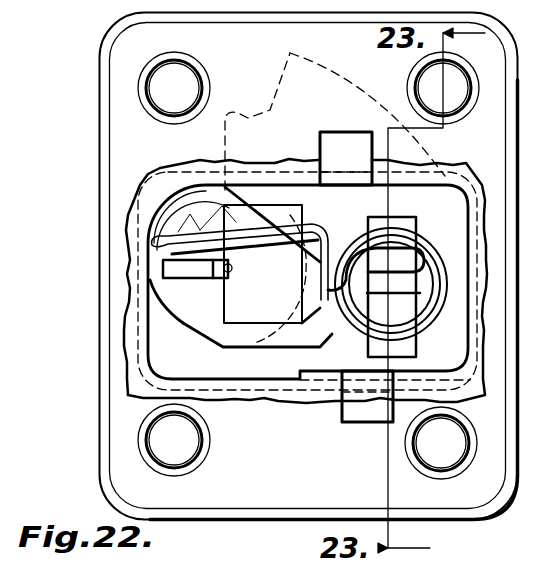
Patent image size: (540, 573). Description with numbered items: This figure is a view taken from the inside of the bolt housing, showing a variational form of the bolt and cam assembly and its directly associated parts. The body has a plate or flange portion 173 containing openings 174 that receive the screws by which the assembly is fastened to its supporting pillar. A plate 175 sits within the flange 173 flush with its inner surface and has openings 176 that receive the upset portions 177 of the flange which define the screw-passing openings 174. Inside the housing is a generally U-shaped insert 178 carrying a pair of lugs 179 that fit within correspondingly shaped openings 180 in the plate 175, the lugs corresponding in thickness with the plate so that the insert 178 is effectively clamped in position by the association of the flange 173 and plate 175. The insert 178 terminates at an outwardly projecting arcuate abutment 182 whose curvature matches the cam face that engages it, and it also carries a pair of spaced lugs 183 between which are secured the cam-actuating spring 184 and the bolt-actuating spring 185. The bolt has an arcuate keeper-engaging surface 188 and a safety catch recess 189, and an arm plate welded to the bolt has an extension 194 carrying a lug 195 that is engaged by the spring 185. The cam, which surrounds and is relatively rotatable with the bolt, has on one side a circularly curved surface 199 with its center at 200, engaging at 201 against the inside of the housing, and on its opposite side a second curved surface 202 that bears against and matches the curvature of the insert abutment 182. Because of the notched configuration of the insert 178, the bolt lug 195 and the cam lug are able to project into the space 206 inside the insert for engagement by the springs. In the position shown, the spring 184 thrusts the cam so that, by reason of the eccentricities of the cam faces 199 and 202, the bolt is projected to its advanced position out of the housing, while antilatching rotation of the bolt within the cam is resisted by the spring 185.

The plate or flange portion 173 is at (108, 369).
The openings 174 is at (160, 103).
The plate 175 is at (138, 392).
The openings 176 is at (145, 88).
The upset portions 177 is at (157, 115).
The insert 178 is at (296, 368).
The lugs 179 is at (332, 152).
The openings 180 is at (343, 134).
The arcuate abutment 182 is at (305, 347).
The spaced lugs 183 is at (394, 282).
The cam-actuating spring 184 is at (165, 240).
The bolt-actuating spring 185 is at (160, 302).
The keeper-engaging surface 188 is at (343, 62).
The safety catch recess 189 is at (246, 102).
The extension 194 is at (272, 264).
The lug 195 is at (163, 267).
The circularly curved surface 199 is at (180, 252).
The center 200 is at (160, 340).
The engagement point 201 is at (175, 289).
The second curved surface 202 is at (306, 340).
The space 206 is at (128, 362).